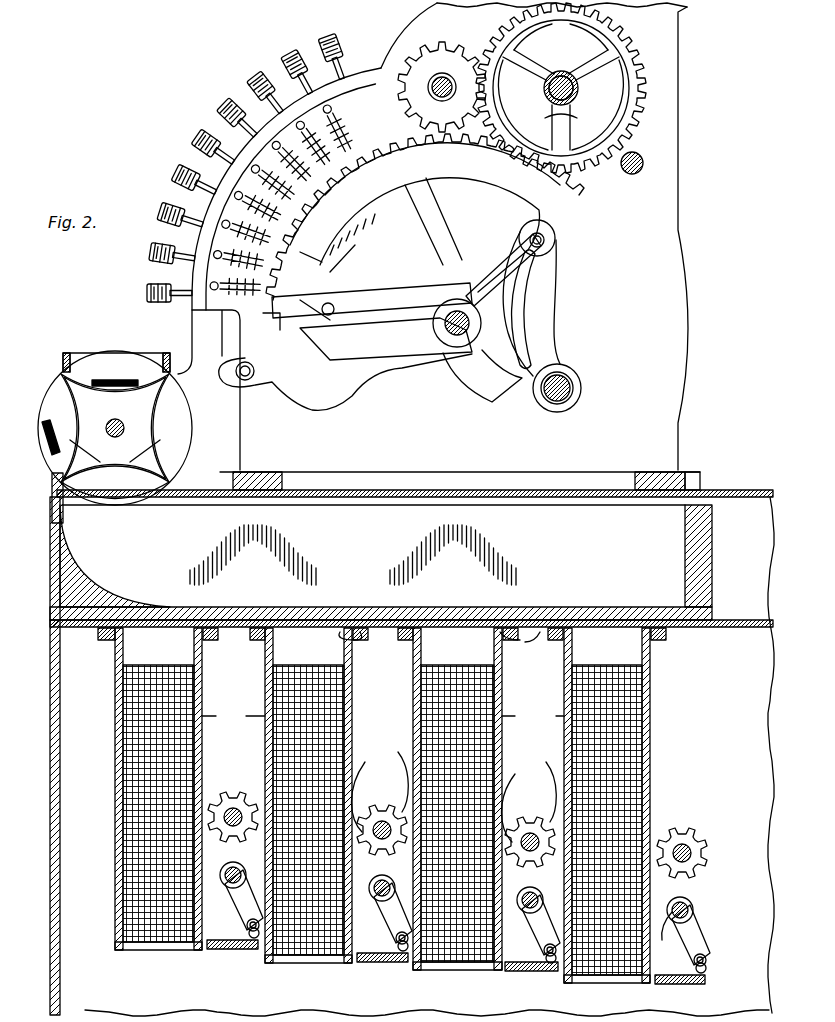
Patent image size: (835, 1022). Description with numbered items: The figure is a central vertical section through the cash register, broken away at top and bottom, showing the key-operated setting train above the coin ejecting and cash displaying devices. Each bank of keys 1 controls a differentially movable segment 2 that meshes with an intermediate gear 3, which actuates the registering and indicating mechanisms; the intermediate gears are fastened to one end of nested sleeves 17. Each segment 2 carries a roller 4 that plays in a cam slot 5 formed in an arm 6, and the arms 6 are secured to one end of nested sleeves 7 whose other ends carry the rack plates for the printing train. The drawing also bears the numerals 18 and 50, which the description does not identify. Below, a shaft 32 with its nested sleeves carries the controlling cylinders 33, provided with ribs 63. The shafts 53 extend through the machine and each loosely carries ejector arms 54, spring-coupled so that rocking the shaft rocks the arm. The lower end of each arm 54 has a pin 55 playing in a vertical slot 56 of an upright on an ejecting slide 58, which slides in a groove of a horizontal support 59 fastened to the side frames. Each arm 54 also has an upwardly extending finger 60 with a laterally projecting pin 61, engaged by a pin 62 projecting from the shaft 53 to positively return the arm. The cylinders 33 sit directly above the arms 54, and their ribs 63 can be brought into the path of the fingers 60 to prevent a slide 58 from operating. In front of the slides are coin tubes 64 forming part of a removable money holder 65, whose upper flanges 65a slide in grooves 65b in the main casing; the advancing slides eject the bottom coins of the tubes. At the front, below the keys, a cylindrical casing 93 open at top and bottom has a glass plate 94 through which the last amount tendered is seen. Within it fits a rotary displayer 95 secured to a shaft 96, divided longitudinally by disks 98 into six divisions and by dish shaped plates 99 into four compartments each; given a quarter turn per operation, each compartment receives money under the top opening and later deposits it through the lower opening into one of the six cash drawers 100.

The keys 1 is at (196, 180).
The differentially movable segment 2 is at (505, 192).
The intermediate gear 3 is at (640, 100).
The roller 4 is at (546, 244).
The cam slot 5 is at (525, 325).
The arm 6 is at (541, 290).
The nested sleeves 7 is at (575, 386).
The nested sleeves 17 is at (561, 104).
The lever 18 is at (548, 392).
The shaft 50 is at (566, 84).
The shaft 32 is at (690, 853).
The controlling cylinders 33 is at (242, 792).
The shaft 53 is at (228, 882).
The ejector arm 54 is at (246, 918).
The pin 55 is at (397, 938).
The vertical slot 56 is at (706, 968).
The ejecting slide 58 is at (207, 950).
The horizontal support 59 is at (385, 964).
The finger 60 is at (662, 929).
The pin 61 is at (540, 908).
The pin 62 is at (402, 870).
The ribs 63 is at (712, 820).
The coin tubes 64 is at (383, 716).
The removable money holder 65 is at (308, 799).
The flanges 65a is at (457, 805).
The grooves 65b is at (441, 649).
The cylindrical casing 93 is at (192, 440).
The glass plate 94 is at (48, 442).
The rotary displayer 95 is at (115, 487).
The shaft 96 is at (119, 424).
The disks 98 is at (100, 364).
The dish shaped plates 99 is at (105, 470).
The cash drawers 100 is at (353, 555).